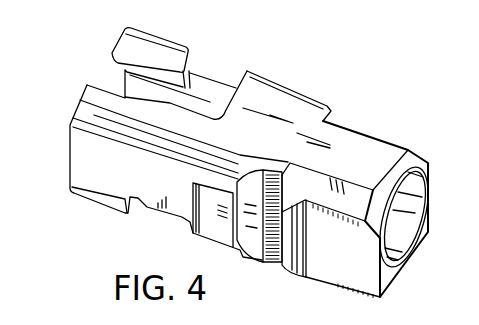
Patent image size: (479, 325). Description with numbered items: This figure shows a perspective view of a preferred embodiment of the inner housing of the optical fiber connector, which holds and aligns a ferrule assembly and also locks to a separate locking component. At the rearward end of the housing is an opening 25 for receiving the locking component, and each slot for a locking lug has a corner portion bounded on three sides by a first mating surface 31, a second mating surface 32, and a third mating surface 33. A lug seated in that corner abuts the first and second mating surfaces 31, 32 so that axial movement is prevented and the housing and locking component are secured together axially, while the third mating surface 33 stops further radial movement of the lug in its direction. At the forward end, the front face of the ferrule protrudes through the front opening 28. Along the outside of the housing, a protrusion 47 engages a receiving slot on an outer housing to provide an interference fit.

The opening 25 is at (108, 71).
The front opening 28 is at (397, 226).
The first mating surface 31 is at (183, 63).
The third mating surface 33 is at (212, 85).
The second mating surface 32 is at (236, 72).
The protrusion 47 is at (212, 222).